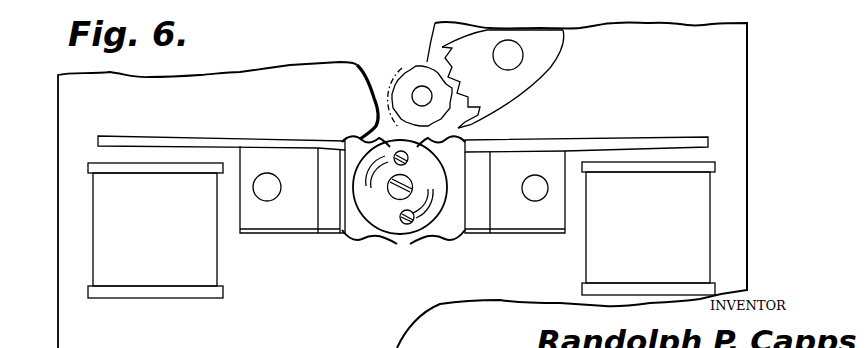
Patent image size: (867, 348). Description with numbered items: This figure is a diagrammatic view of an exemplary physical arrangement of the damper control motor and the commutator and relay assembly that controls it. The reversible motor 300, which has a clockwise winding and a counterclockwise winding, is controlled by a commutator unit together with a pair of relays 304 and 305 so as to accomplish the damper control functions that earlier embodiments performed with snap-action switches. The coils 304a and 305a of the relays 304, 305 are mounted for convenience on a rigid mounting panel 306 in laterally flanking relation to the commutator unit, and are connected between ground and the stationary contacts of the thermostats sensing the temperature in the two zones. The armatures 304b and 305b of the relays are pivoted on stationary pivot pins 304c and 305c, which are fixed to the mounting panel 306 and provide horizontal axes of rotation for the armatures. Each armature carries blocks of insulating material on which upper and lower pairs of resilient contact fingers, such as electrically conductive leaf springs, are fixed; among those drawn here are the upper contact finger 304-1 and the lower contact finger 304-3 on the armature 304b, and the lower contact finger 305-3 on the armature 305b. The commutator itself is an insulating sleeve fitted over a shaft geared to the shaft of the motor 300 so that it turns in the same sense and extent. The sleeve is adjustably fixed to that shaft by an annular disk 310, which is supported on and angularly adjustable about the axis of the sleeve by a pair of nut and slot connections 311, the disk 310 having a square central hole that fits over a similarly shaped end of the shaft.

The reversible motor 300 is at (436, 37).
The relay 304 is at (229, 242).
The coil 304a is at (166, 231).
The armature 304b is at (173, 136).
The stationary pivot pin 304c is at (276, 193).
The contact finger 304-1 is at (364, 137).
The contact finger 304-3 is at (378, 244).
The relay 305 is at (579, 237).
The coil 305a is at (662, 230).
The armature 305b is at (615, 137).
The stationary pivot pin 305c is at (532, 196).
The contact finger 305-3 is at (427, 246).
The mounting panel 306 is at (58, 132).
The annular disk 310 is at (378, 201).
The nut and slot connection 311 is at (403, 160).